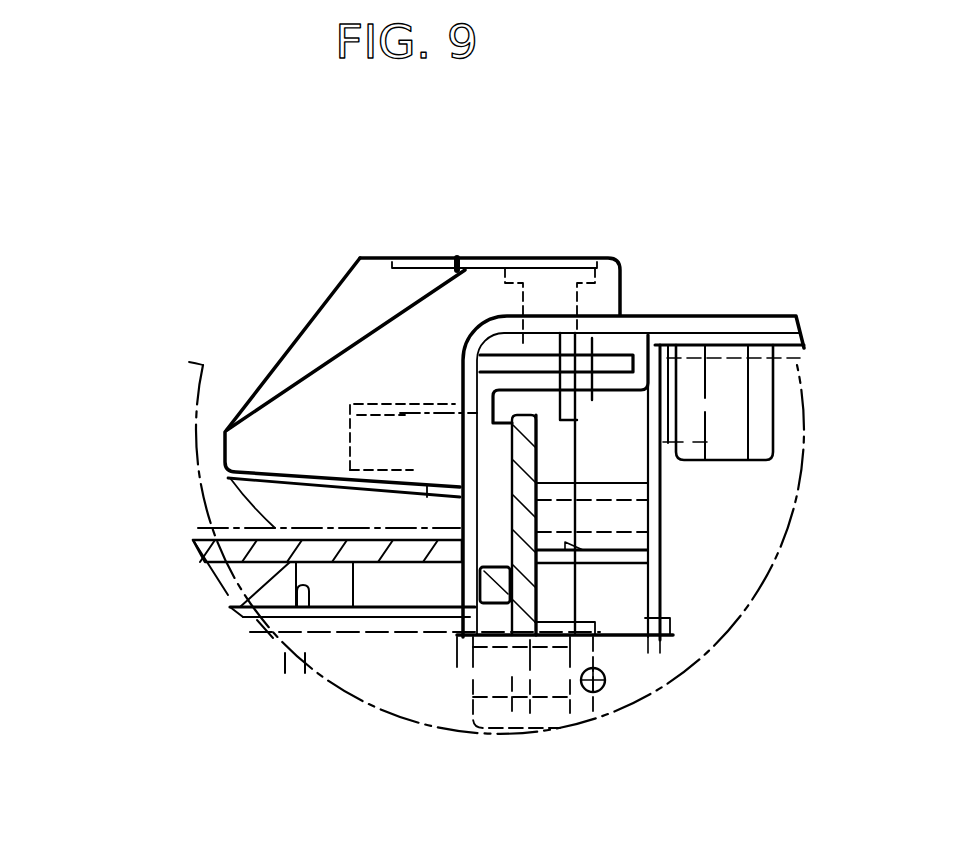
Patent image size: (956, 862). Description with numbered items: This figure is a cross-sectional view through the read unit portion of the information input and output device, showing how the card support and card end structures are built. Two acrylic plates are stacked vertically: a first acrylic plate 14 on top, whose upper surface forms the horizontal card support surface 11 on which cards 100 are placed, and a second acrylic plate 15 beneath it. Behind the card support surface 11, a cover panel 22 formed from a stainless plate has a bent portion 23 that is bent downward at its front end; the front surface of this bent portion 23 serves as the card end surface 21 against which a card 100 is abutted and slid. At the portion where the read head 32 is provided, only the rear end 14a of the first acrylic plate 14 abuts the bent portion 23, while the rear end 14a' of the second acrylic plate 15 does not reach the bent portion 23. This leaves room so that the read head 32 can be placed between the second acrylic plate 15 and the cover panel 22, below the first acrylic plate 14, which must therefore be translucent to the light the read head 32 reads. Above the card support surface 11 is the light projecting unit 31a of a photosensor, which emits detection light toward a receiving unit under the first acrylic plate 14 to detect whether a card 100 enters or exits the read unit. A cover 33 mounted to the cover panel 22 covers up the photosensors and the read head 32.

The card 100 is at (483, 526).
The card support surface 11 is at (236, 528).
The first acrylic plate 14 is at (216, 538).
The rear end 14a is at (471, 707).
The engaging hole 14a' is at (220, 662).
The second acrylic plate 15 is at (242, 585).
The card end surface 21 is at (434, 412).
The cover panel 22 is at (721, 330).
The bent portion 23 is at (472, 377).
The light projecting unit 31a is at (383, 407).
The read head 32 is at (307, 637).
The cover 33 is at (373, 266).